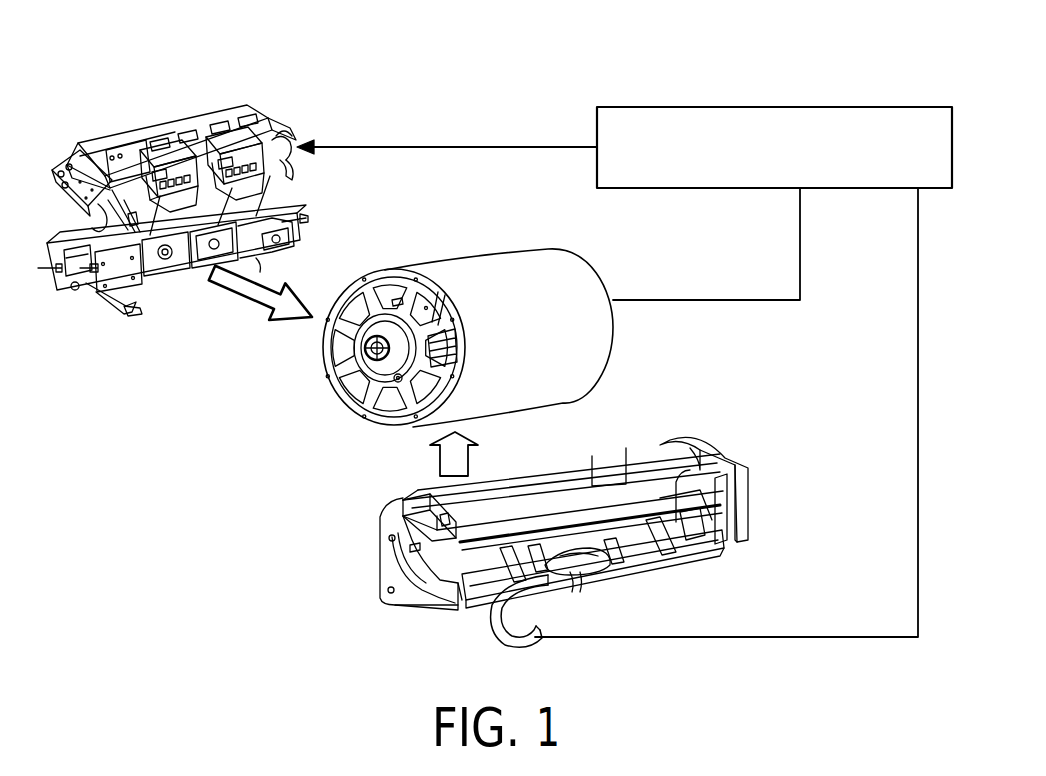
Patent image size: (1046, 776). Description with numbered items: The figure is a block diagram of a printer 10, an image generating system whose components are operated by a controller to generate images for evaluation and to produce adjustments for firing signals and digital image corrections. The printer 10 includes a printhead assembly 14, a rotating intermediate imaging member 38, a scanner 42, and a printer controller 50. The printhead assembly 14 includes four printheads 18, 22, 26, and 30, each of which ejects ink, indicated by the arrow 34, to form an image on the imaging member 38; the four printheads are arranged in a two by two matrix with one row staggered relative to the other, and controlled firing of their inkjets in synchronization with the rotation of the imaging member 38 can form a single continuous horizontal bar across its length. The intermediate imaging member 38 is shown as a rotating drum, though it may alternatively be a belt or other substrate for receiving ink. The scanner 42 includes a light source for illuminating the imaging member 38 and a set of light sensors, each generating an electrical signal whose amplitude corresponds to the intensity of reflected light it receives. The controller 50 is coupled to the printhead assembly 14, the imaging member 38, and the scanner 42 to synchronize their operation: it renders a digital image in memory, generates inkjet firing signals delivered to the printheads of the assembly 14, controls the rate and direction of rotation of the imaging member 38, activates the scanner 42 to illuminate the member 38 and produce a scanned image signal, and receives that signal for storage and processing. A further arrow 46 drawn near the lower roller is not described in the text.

The printer 10 is at (99, 91).
The printhead assembly 14 is at (258, 105).
The printhead 18 is at (199, 110).
The printhead 22 is at (300, 160).
The printhead 26 is at (150, 282).
The printhead 30 is at (245, 262).
The arrow 34 is at (254, 302).
The rotating intermediate imaging member 38 is at (597, 384).
The scanner 42 is at (683, 447).
The transfix roller movement direction arrow 46 is at (440, 462).
The printer controller 50 is at (774, 106).